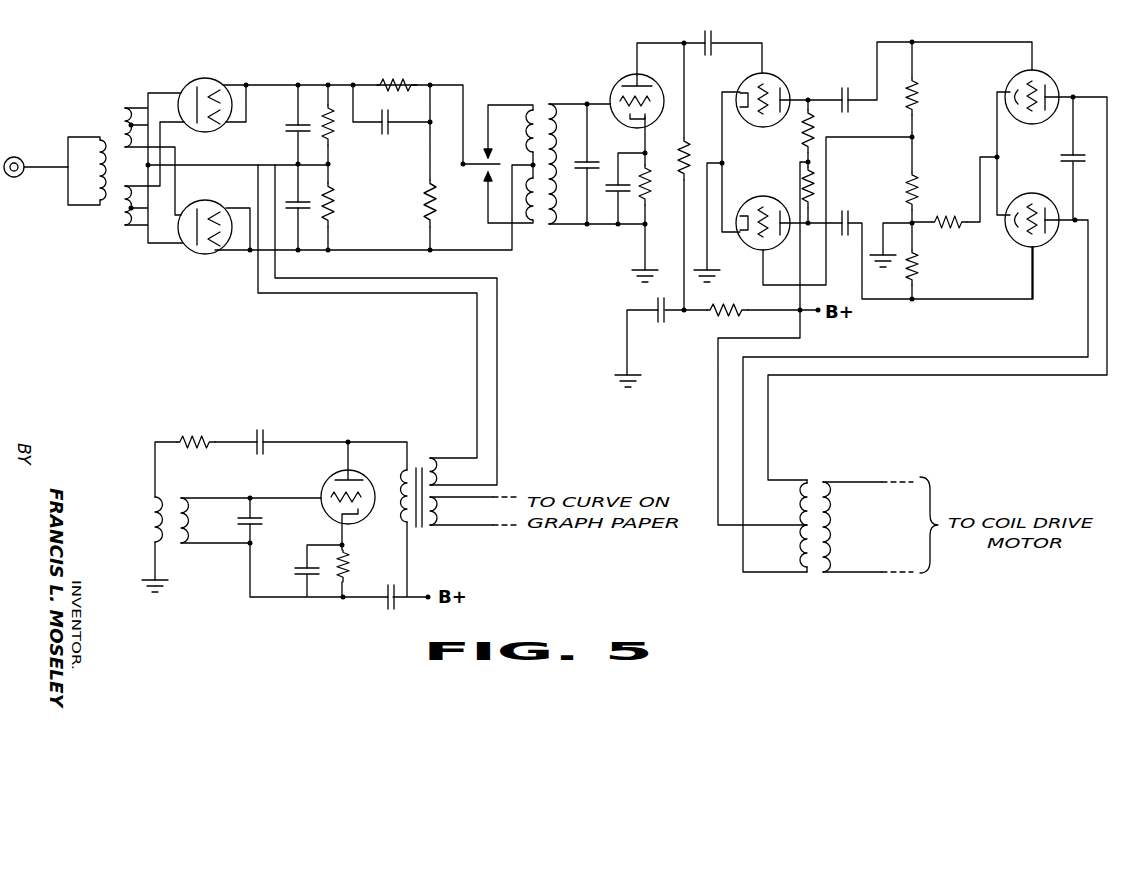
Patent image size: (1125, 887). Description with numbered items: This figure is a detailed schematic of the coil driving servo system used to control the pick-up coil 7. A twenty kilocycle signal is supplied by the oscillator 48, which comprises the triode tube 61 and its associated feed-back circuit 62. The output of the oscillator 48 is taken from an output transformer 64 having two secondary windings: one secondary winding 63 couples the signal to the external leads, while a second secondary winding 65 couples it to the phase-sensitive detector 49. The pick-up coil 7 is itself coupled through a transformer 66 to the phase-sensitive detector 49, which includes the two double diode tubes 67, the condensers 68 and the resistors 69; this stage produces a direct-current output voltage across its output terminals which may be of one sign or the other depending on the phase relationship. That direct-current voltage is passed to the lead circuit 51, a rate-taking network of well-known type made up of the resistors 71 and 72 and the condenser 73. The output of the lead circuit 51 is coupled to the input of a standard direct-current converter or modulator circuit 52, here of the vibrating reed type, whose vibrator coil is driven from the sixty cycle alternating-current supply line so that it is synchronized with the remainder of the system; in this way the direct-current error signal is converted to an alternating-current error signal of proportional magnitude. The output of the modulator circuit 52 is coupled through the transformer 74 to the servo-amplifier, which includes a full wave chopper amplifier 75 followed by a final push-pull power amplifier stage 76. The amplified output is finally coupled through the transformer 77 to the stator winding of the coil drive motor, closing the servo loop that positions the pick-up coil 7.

The pick-up coil 7 is at (14, 157).
The oscillator 48 is at (312, 502).
The phase-sensitive detector 49 is at (260, 71).
The lead circuit 51 is at (406, 126).
The D.-C. converter or modulator circuit 52 is at (493, 67).
The triode tube 61 is at (336, 479).
The feed-back circuit 62 is at (213, 446).
The secondary winding 63 is at (448, 514).
The output transformer 64 is at (418, 524).
The second secondary winding 65 is at (440, 470).
The transformer 66 is at (118, 128).
The double diode tubes 67 is at (207, 200).
The condensers 68 is at (290, 193).
The resistors 69 is at (336, 205).
The resistor 71 is at (405, 82).
The resistor 72 is at (423, 207).
The condenser 73 is at (388, 136).
The transformer 74 is at (542, 108).
The full wave chopper amplifier 75 is at (623, 67).
The push-pull power amplifier stage 76 is at (1042, 167).
The transformer 77 is at (812, 484).